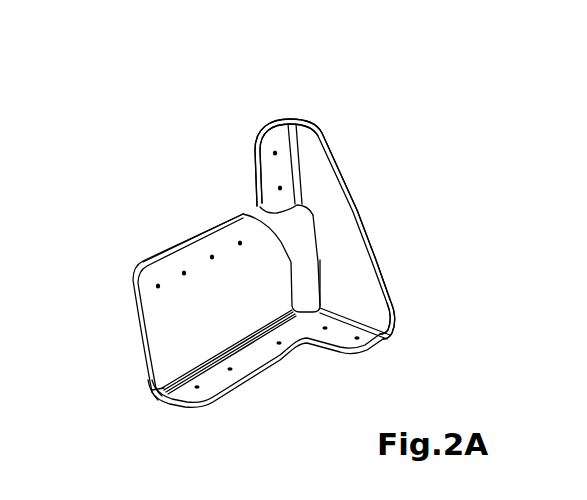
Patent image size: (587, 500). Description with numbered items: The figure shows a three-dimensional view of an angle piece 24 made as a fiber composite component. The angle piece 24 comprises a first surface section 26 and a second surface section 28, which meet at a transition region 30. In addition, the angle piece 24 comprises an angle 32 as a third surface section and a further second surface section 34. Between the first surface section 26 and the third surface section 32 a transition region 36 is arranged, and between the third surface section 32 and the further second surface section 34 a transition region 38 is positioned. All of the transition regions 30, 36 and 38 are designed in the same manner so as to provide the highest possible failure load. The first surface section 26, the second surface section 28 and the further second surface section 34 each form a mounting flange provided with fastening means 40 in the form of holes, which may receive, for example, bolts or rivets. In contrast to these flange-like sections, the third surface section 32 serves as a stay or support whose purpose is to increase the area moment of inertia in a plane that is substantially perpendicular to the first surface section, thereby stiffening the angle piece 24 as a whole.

The angle piece 24 is at (200, 190).
The first surface section 26 is at (207, 384).
The second surface section 28 is at (157, 317).
The transition region 30 is at (147, 392).
The angle 32 is at (365, 270).
The further second surface section 34 is at (278, 137).
The transition region 36 is at (398, 343).
The transition region 38 is at (295, 112).
The fastening means 40 is at (158, 284).